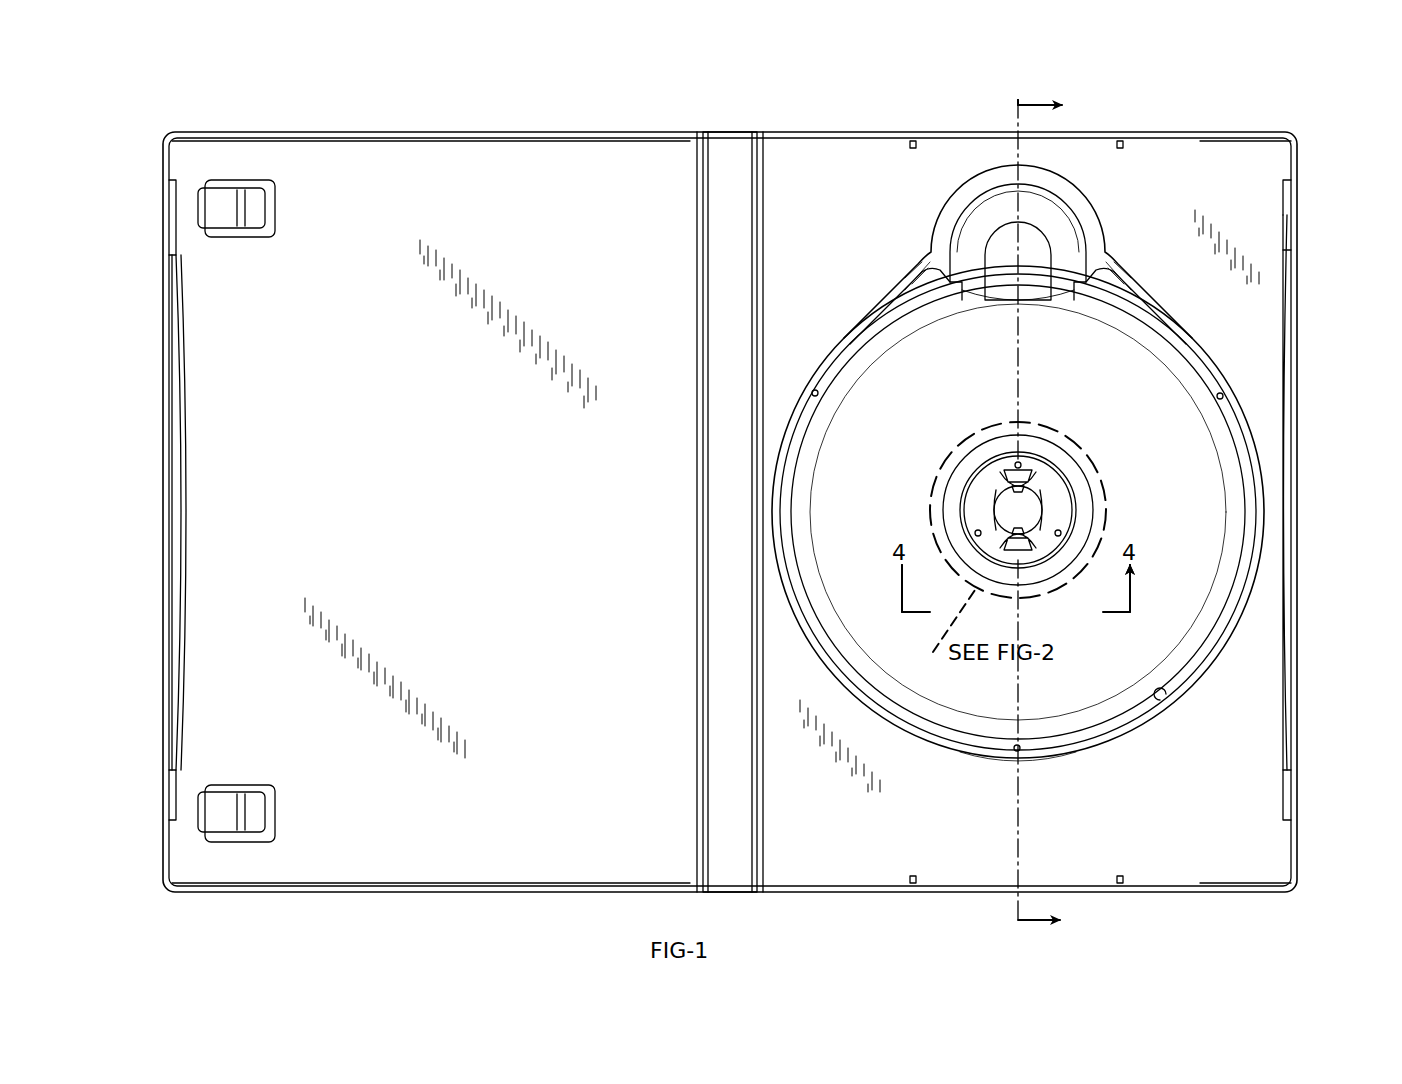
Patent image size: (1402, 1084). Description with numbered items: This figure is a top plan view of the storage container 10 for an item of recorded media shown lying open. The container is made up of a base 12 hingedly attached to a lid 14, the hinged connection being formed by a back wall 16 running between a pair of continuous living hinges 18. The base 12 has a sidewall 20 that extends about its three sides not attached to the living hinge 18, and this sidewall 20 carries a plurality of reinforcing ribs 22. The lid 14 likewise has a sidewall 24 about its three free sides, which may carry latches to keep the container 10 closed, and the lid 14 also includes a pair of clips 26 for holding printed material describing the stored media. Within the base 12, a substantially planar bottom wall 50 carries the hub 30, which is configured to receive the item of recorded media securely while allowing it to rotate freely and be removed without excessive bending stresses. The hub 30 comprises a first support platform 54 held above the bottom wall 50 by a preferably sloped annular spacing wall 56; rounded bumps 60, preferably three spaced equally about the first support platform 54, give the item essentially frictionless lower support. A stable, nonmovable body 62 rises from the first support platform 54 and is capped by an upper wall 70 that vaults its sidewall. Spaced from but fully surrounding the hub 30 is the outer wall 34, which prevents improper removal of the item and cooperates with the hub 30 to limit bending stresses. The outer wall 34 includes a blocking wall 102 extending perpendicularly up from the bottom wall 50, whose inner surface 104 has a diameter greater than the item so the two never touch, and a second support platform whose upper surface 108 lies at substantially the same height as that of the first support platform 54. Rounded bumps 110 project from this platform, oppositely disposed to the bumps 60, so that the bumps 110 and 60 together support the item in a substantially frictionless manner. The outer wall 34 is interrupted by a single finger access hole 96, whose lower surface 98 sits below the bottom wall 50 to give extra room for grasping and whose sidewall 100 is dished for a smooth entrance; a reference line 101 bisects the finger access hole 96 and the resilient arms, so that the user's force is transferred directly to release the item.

The storage container 10 is at (465, 920).
The base 12 is at (1250, 180).
The lid 14 is at (220, 322).
The back wall 16 is at (725, 200).
The living hinge 18 is at (703, 258).
The sidewall 20 is at (1235, 130).
The reinforcing rib 22 is at (913, 150).
The sidewall 24 is at (440, 140).
The clip 26 is at (262, 206).
The hub 30 is at (938, 468).
The outer wall 34 is at (1115, 742).
The bottom wall 50 is at (1240, 688).
The first support platform 54 is at (1032, 465).
The annular spacing wall 56 is at (980, 452).
The bump 60 is at (975, 533).
The body 62 is at (1036, 495).
The upper wall 70 is at (1030, 505).
The finger access hole 96 is at (1060, 220).
The lower surface 98 is at (995, 262).
The sidewall 100 is at (1066, 250).
The reference line 101 is at (1030, 345).
The blocking wall 102 is at (990, 757).
The inner surface 104 is at (1160, 700).
The upper surface 108 is at (935, 490).
The bump 110 is at (818, 393).